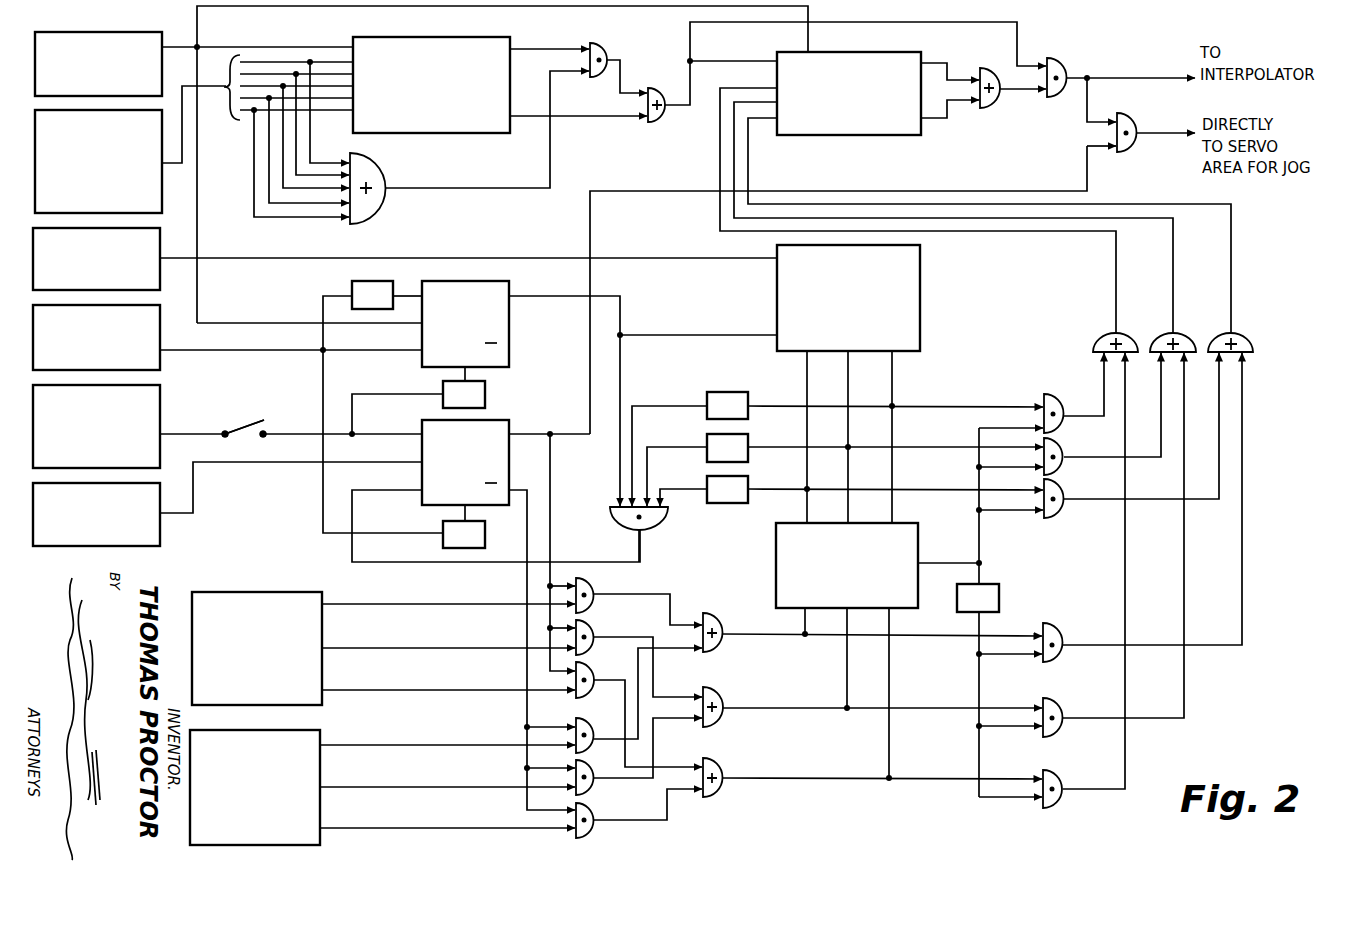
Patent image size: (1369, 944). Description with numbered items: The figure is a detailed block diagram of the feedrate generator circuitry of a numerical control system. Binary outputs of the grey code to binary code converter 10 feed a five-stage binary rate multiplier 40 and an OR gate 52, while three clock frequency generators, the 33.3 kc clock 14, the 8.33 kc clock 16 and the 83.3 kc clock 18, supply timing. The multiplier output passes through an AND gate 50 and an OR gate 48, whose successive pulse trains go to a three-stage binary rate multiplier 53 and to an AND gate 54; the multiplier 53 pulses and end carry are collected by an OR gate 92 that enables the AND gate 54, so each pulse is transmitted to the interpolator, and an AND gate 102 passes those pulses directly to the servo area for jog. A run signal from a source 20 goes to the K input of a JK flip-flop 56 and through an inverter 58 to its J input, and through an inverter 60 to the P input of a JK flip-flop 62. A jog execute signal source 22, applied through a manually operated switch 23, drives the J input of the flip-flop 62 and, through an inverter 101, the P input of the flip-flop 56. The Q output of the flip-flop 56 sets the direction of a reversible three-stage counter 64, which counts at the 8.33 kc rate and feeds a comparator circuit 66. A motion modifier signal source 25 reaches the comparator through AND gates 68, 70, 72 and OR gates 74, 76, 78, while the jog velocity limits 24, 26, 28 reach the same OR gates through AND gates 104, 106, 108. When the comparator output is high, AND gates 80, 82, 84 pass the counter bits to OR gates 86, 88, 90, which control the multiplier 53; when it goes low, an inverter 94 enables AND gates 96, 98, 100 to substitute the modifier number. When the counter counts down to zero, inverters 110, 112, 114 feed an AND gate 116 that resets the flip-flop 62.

The clock frequency generator 14 is at (125, 33).
The code converter 10 is at (162, 204).
The clock frequency generator 16 is at (160, 250).
The run signal source 20 is at (160, 324).
The jog execute signal source 22 is at (160, 404).
The manually operated switch 23 is at (251, 425).
The clock frequency generator 18 is at (160, 503).
The jog velocity limit 24 is at (260, 635).
The jog velocity limit 26 is at (260, 635).
The jog velocity limit 28 is at (285, 586).
The motion modifier signal source 25 is at (320, 739).
The five-stage binary rate multiplier 40 is at (462, 38).
The AND gate 50 is at (597, 45).
The OR gate 48 is at (672, 80).
The OR gate 52 is at (377, 172).
The three-stage binary rate multiplier 53 is at (884, 55).
The OR gate 92 is at (990, 60).
The AND gate 54 is at (1053, 60).
The AND gate 102 is at (1125, 119).
The three-stage counter 64 is at (922, 271).
The inverter 58 is at (352, 289).
The JK flip-flop 56 is at (510, 290).
The inverter 101 is at (486, 400).
The JK flip-flop 62 is at (510, 429).
The inverter 60 is at (486, 545).
The inverter 110 is at (749, 399).
The inverter 112 is at (749, 444).
The inverter 114 is at (749, 486).
The AND gate 116 is at (658, 528).
The comparator circuit 66 is at (920, 534).
The inverter 94 is at (1000, 598).
The AND gate 80 is at (1060, 400).
The AND gate 82 is at (1063, 456).
The AND gate 84 is at (1063, 498).
The OR gate 86 is at (1118, 336).
The OR gate 88 is at (1177, 336).
The OR gate 90 is at (1237, 336).
The AND gate 96 is at (1062, 631).
The AND gate 98 is at (1062, 706).
The AND gate 100 is at (1062, 778).
The AND gate 104 is at (593, 597).
The AND gate 106 is at (593, 637).
The AND gate 108 is at (593, 679).
The AND gate 68 is at (598, 719).
The AND gate 70 is at (597, 772).
The AND gate 72 is at (593, 819).
The OR gate 74 is at (715, 620).
The OR gate 76 is at (715, 696).
The OR gate 78 is at (715, 769).